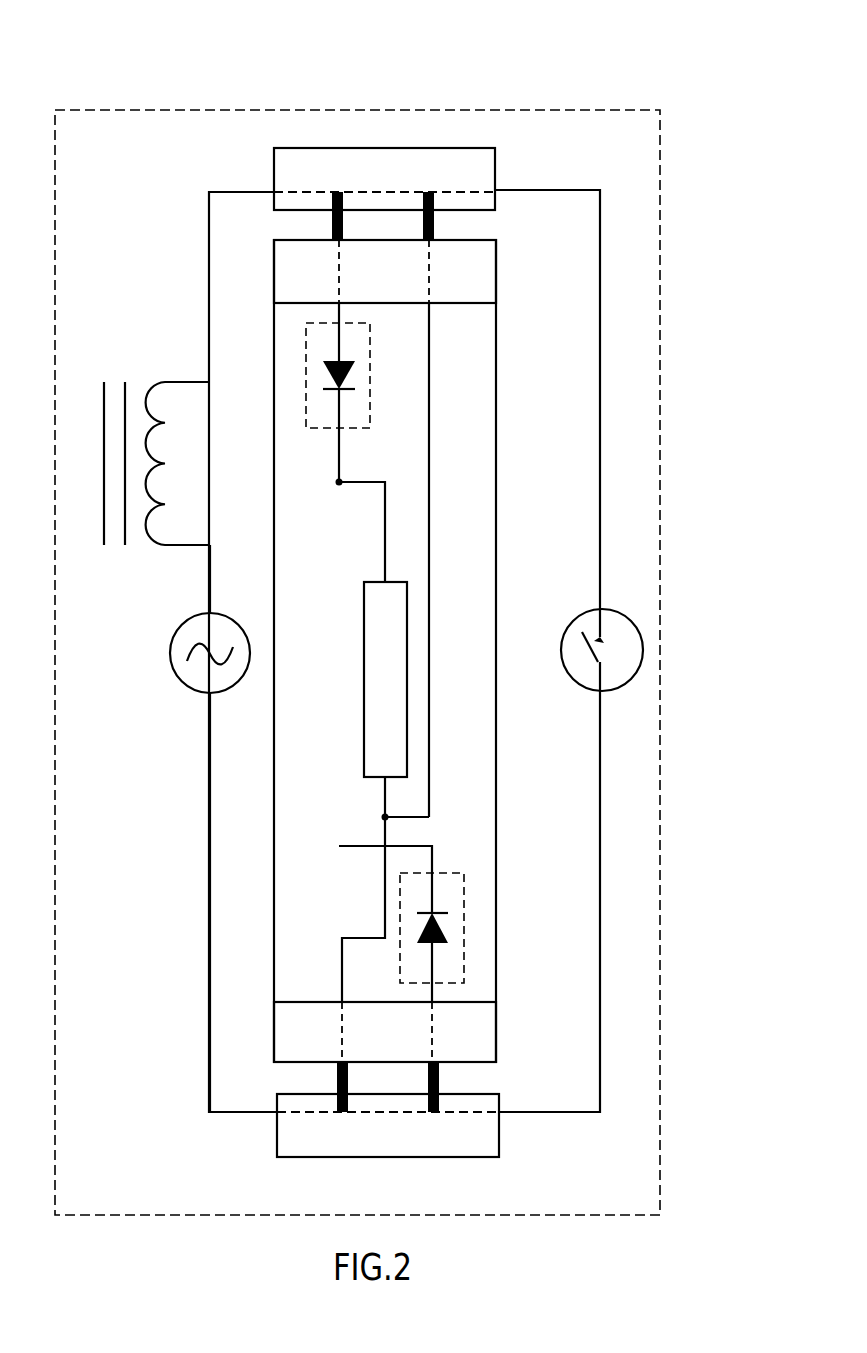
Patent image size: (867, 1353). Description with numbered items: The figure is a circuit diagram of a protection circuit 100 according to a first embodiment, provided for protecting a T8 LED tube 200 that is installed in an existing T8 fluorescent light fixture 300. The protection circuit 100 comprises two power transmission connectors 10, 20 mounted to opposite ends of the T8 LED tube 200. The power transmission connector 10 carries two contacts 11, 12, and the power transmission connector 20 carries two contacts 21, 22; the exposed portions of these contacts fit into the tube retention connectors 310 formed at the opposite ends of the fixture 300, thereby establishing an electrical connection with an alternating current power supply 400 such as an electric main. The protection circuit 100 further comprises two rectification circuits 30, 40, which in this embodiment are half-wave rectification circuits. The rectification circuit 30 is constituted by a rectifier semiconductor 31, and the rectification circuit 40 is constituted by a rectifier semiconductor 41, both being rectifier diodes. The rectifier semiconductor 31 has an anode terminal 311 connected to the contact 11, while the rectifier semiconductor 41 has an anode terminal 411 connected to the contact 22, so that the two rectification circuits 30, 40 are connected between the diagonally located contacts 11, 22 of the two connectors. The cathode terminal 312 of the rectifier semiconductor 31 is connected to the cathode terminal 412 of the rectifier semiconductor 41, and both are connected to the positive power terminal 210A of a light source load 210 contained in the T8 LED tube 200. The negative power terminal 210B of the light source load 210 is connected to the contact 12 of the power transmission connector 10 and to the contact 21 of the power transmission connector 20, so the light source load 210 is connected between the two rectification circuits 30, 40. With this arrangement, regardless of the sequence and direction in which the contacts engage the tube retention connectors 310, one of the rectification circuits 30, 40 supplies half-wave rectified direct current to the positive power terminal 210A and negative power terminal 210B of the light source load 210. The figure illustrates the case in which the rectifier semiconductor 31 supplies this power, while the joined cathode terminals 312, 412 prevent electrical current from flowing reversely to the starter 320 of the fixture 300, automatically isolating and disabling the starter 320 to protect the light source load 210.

The T8 fluorescent light fixture 300 is at (125, 110).
The tube retention connector 310 is at (364, 162).
The protection circuit 100 is at (318, 825).
The T8 LED tube 200 is at (496, 760).
The power transmission connector 10 is at (480, 279).
The power transmission connector 20 is at (305, 1031).
The contact 11 is at (332, 229).
The contact 12 is at (434, 222).
The contact 21 is at (338, 1086).
The contact 22 is at (439, 1080).
The rectification circuit 30 is at (370, 378).
The rectifier semiconductor 31 is at (322, 362).
The anode terminal 311 is at (338, 313).
The cathode terminal 312 is at (339, 455).
The light source load 210 is at (372, 737).
The positive power terminal 210A is at (385, 530).
The negative power terminal 210B is at (385, 797).
The rectification circuit 40 is at (464, 951).
The rectifier semiconductor 41 is at (448, 932).
The anode terminal 411 is at (432, 966).
The cathode terminal 412 is at (432, 898).
The alternating current power supply 400 is at (170, 641).
The starter 320 is at (643, 648).